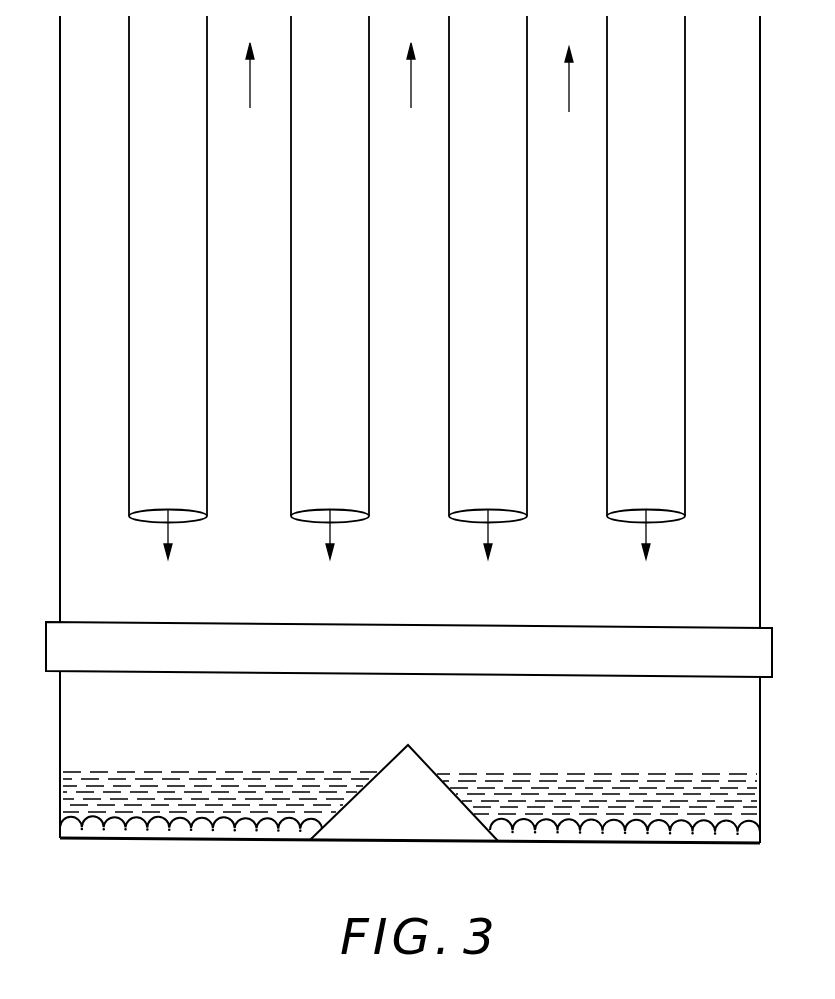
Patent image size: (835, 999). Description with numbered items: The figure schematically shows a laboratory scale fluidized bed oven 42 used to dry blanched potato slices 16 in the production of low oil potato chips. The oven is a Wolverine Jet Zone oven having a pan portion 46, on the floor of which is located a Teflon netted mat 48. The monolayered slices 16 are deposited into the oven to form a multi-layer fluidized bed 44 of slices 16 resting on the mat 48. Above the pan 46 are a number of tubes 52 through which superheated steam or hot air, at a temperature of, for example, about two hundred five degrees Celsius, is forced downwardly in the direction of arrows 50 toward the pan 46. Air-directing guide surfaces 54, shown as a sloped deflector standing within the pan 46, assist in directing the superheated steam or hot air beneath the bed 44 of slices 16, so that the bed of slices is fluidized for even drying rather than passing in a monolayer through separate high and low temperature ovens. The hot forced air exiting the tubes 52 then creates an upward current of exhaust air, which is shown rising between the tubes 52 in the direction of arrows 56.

The slices 16 is at (252, 820).
The fluidized bed oven 42 is at (56, 726).
The multi-layer fluidized bed 44 is at (252, 820).
The pan portion 46 is at (761, 717).
The Teflon netted mat 48 is at (683, 832).
The arrows 50 is at (646, 535).
The tubes 52 is at (685, 362).
The air-directing guide surfaces 54 is at (387, 765).
The arrows 56 is at (569, 84).